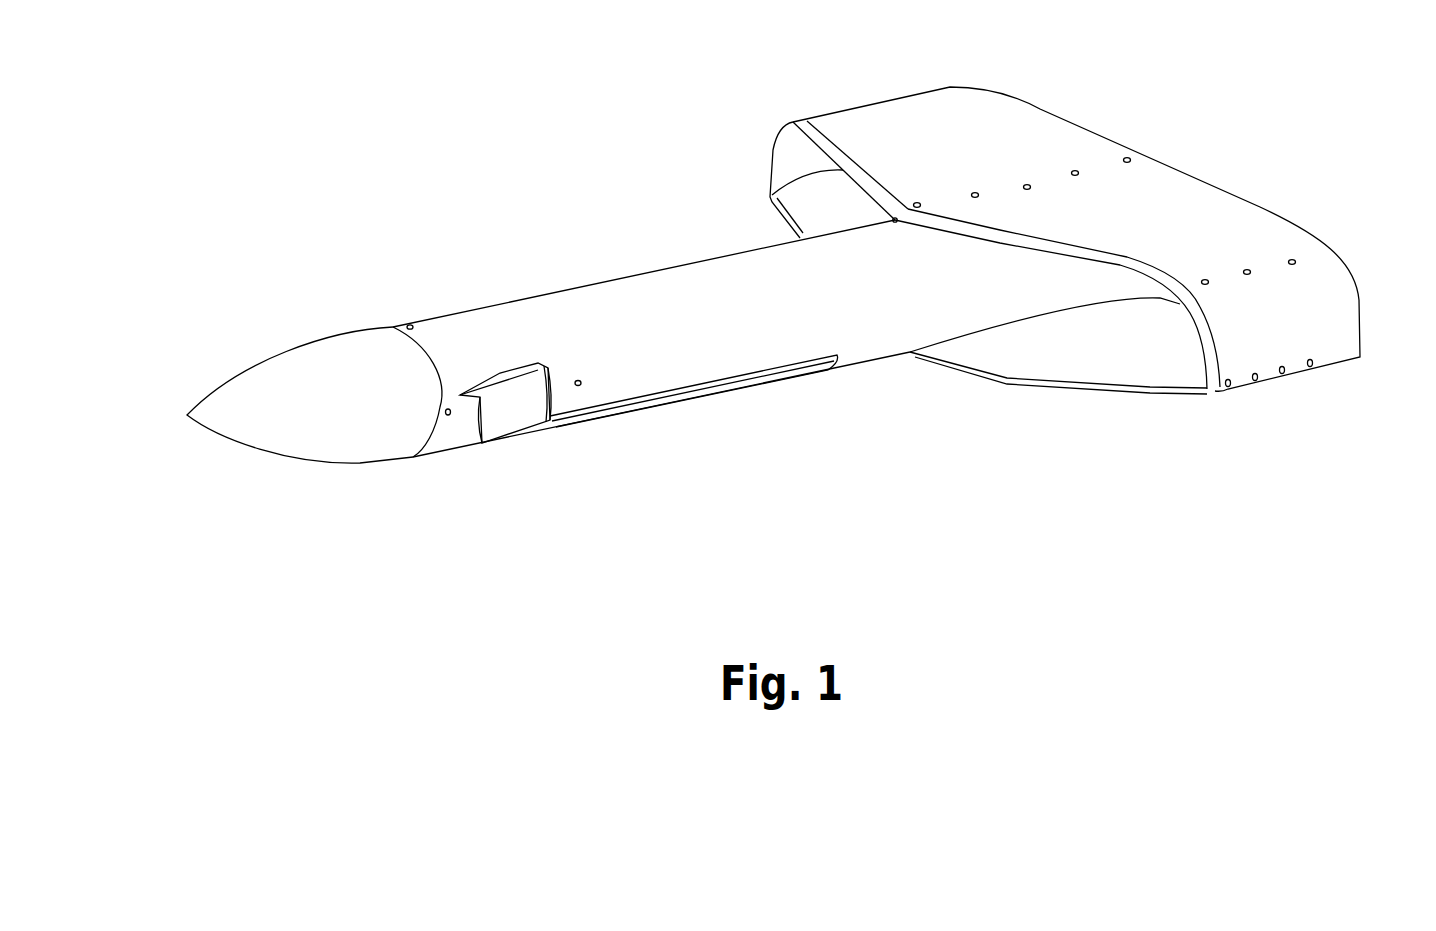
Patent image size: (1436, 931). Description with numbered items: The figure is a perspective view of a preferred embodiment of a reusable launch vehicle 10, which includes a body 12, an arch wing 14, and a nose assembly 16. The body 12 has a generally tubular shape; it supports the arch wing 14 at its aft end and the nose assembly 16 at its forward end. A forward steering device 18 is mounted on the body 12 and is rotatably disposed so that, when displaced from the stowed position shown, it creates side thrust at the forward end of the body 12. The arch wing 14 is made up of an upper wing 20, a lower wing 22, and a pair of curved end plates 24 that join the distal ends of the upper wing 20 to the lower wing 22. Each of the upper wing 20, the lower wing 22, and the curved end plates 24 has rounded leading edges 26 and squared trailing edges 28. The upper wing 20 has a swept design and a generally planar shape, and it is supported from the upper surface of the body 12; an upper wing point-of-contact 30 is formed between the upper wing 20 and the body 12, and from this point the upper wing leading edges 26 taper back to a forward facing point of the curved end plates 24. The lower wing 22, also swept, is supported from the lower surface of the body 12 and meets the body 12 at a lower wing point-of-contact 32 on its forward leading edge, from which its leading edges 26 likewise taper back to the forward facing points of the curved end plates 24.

The reusable launch vehicle 10 is at (278, 250).
The body 12 is at (507, 318).
The arch wing 14 is at (975, 57).
The nose assembly 16 is at (285, 362).
The forward steering device 18 is at (513, 430).
The upper wing 20 is at (1200, 215).
The lower wing 22 is at (1100, 358).
The curved end plates 24 is at (1343, 287).
The rounded leading edges 26 is at (1120, 263).
The squared trailing edges 28 is at (1147, 160).
The upper wing point-of-contact 30 is at (895, 222).
The lower wing point-of-contact 32 is at (910, 353).